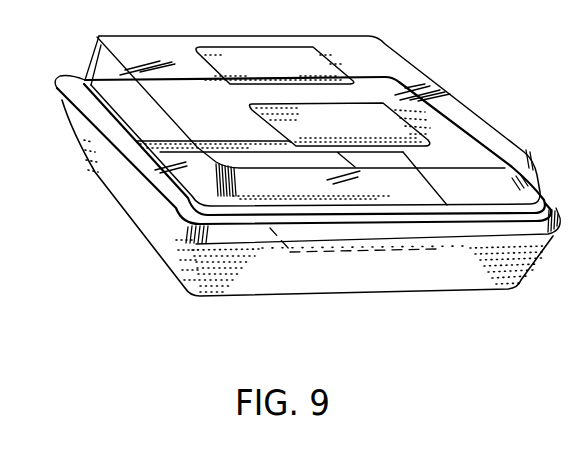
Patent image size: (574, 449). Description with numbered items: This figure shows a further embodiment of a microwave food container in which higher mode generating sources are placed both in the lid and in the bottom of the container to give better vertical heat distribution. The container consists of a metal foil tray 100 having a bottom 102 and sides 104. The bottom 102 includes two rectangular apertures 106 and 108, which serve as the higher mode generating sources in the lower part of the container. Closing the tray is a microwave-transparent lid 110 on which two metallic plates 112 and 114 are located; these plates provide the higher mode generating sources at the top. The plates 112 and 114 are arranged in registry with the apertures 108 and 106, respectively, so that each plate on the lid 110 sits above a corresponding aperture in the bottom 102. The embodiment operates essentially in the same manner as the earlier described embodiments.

The metal foil tray 100 is at (112, 235).
The bottom 102 is at (195, 301).
The sides 104 is at (290, 286).
The rectangular aperture 106 is at (380, 257).
The rectangular aperture 108 is at (250, 158).
The microwave-transparent lid 110 is at (459, 82).
The metallic plate 112 is at (280, 73).
The metallic plate 114 is at (343, 135).